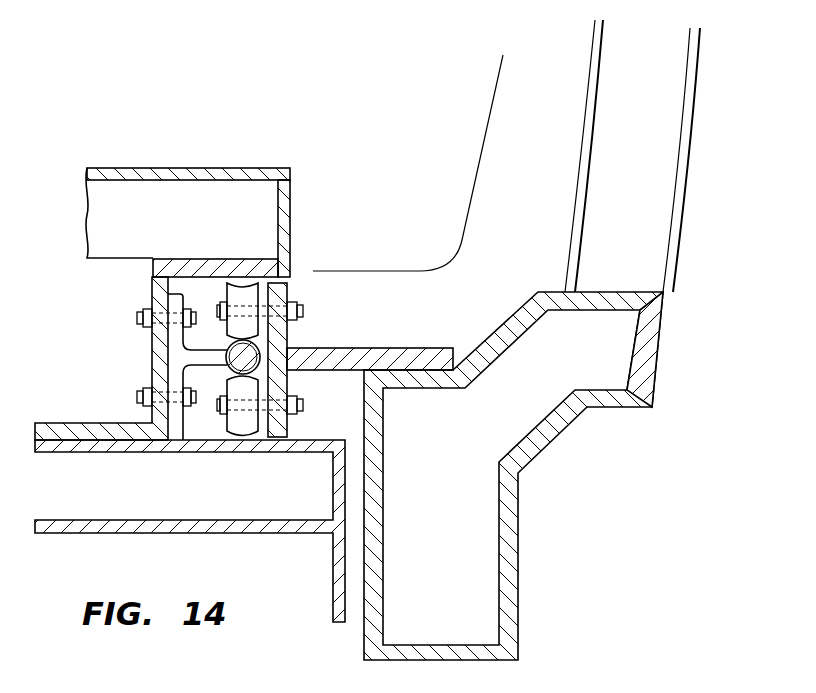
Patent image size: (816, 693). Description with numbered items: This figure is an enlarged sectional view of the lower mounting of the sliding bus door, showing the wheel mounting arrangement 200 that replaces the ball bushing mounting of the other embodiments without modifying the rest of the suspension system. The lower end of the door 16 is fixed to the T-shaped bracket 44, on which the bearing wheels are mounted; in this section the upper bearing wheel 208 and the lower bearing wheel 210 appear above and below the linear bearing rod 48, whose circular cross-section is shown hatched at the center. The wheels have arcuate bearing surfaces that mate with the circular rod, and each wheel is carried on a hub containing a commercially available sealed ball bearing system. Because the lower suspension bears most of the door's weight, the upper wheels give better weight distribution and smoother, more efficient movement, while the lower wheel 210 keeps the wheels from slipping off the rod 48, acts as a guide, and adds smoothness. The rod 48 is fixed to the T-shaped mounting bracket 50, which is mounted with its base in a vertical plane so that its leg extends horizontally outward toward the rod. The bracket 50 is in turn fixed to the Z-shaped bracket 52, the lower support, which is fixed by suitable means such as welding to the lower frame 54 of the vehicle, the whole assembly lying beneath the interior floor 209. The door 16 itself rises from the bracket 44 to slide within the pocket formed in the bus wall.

The door 16 is at (592, 188).
The T-shaped bracket 44 is at (402, 358).
The linear bearing rod 48 is at (262, 341).
The T-shaped mounting bracket 50 is at (177, 420).
The Z-shaped bracket 52 is at (158, 351).
The lower frame 54 is at (88, 452).
The wheel mounting arrangement 200 is at (296, 292).
The upper bearing wheel 208 is at (243, 295).
The interior floor 209 is at (183, 268).
The lower bearing wheel 210 is at (240, 418).